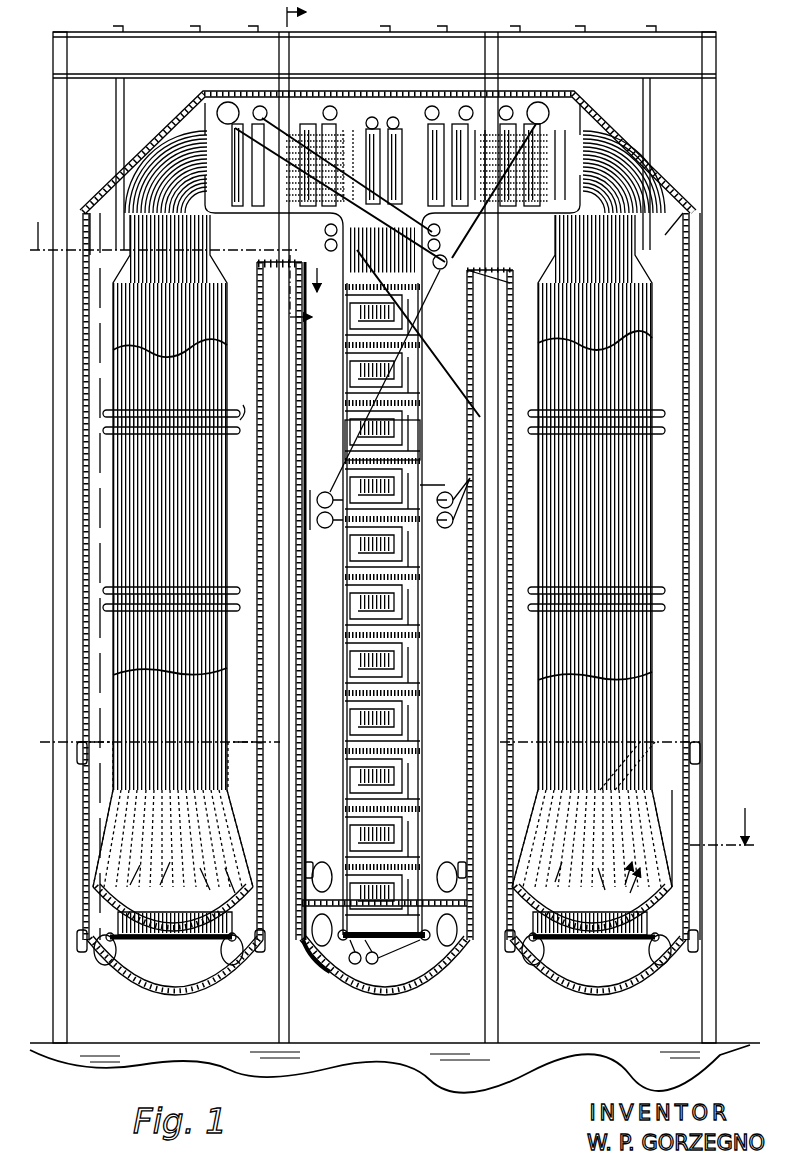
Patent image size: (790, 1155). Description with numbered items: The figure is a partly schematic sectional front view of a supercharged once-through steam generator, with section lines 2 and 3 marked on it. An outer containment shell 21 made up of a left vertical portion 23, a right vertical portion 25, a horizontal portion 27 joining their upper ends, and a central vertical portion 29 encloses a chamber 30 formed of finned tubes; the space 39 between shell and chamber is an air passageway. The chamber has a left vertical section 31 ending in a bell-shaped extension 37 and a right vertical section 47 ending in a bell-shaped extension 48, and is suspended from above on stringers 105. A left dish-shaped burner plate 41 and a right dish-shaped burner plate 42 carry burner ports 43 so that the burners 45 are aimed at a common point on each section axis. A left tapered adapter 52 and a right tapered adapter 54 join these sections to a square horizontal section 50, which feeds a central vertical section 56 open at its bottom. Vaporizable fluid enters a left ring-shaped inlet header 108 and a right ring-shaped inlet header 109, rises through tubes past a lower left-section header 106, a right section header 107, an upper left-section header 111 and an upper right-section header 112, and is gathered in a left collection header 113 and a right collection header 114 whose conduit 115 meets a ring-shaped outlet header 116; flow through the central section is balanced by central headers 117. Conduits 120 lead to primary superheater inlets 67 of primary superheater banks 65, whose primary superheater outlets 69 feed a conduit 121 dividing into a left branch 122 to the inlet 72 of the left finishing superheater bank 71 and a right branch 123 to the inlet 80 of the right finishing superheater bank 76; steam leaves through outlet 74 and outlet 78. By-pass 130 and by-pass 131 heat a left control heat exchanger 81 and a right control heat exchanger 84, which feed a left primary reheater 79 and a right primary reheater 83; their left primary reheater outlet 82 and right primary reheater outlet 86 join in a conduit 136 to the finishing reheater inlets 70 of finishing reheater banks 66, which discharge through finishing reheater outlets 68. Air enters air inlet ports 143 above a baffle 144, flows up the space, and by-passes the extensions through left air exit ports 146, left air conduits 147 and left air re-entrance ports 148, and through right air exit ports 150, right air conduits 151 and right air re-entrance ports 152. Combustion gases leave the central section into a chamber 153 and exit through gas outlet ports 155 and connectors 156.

The section line 2- 2 is at (392, 524).
The section line 3- 3 is at (307, 167).
The outer containment shell 21 is at (722, 518).
The left vertical portion 23 is at (83, 470).
The right vertical portion 25 is at (717, 690).
The horizontal portion 27 is at (652, 178).
The central vertical portion 29 is at (468, 712).
The chamber 30 is at (227, 478).
The left vertical section 31 is at (105, 410).
The bell-shaped extension 37 is at (86, 832).
The space 39 is at (83, 578).
The left dish-shaped burner plate 41 is at (174, 920).
The right dish-shaped burner plate 42 is at (600, 920).
The burner ports 43 is at (384, 879).
The burners 45 is at (419, 869).
The right vertical section 47 is at (656, 700).
The bell-shaped extension 48 is at (672, 812).
The horizontal section 50 is at (395, 125).
The left tapered adapter 52 is at (112, 255).
The right tapered adapter 54 is at (650, 268).
The central vertical section 56 is at (395, 495).
The primary superheater banks 65 is at (422, 644).
The finishing reheater banks 66 is at (348, 438).
The primary superheater inlets 67 is at (382, 962).
The finishing reheater outlets 68 is at (325, 528).
The primary superheater outlets 69 is at (447, 528).
The finishing reheater inlets 70 is at (446, 272).
The left finishing superheater bank 71 is at (351, 154).
The inlet 72 is at (302, 151).
The outlet 74 is at (337, 120).
The right finishing superheater bank 76 is at (462, 120).
The outlet 78 is at (432, 105).
The left primary reheater 79 is at (215, 148).
The inlet 80 is at (466, 105).
The left control heat exchanger 81 is at (227, 101).
The left primary reheater outlet 82 is at (267, 113).
The right primary reheater 83 is at (524, 215).
The right control heat exchanger 84 is at (541, 102).
The right primary reheater outlet 86 is at (516, 100).
The stringers 105 is at (120, 118).
The lower left-section header 106 is at (100, 608).
The right section header 107 is at (665, 600).
The left ring-shaped inlet header 108 is at (174, 945).
The right ring-shaped inlet header 109 is at (600, 945).
The upper left-section header 111 is at (240, 404).
The upper right-section header 112 is at (660, 415).
The left collection header 113 is at (370, 118).
The right collection header 114 is at (394, 118).
The conduit 115 is at (316, 286).
The ring-shaped outlet header 116 is at (426, 940).
The central headers 117 is at (440, 232).
The conduits 120 is at (356, 965).
The conduit 121 is at (470, 478).
The left branch 122 is at (438, 375).
The right branch 123 is at (502, 280).
The by-pass 130 is at (300, 95).
The by-pass 131 is at (470, 118).
The conduit 136 is at (263, 106).
The air inlet ports 143 is at (322, 862).
The baffle 144 is at (447, 866).
The left air exit ports 146 is at (228, 735).
The left air conduits 147 is at (75, 765).
The left air re-entrance ports 148 is at (116, 955).
The right air exit ports 150 is at (640, 790).
The right air conduits 151 is at (690, 752).
The right air re-entrance ports 152 is at (545, 956).
The chamber 153 is at (390, 998).
The gas outlet ports 155 is at (322, 948).
The connectors 156 is at (303, 958).